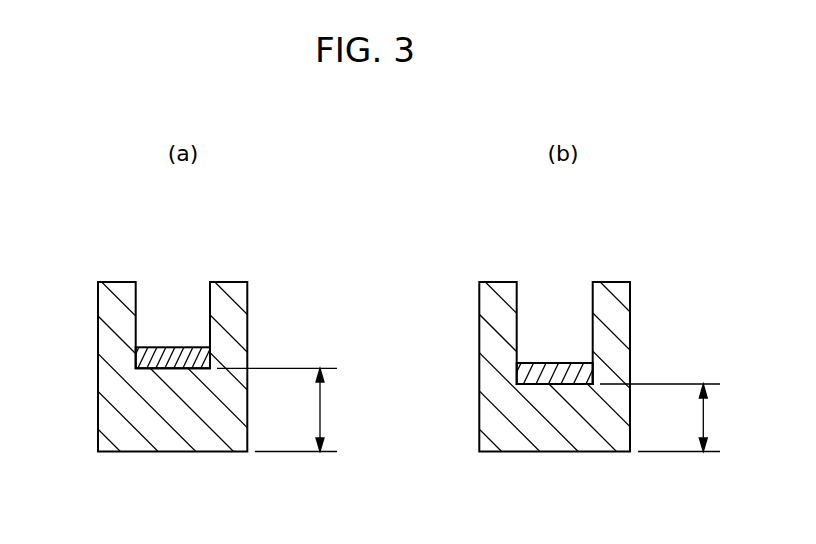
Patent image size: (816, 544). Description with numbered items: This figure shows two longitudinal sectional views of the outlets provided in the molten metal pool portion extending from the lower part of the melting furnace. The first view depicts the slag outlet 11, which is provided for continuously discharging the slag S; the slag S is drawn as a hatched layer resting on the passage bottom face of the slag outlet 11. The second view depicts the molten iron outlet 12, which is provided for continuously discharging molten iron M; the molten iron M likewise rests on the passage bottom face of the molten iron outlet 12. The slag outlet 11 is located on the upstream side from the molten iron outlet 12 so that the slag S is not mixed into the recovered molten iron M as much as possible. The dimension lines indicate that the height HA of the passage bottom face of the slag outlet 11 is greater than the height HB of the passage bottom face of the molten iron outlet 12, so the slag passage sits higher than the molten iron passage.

The slag outlet 11 is at (185, 303).
The molten iron outlet 12 is at (568, 303).
The slag S is at (173, 346).
The molten iron M is at (547, 362).
The height of passage bottom face of slag outlet HA is at (277, 409).
The height of passage bottom face of molten iron outlet HB is at (660, 418).